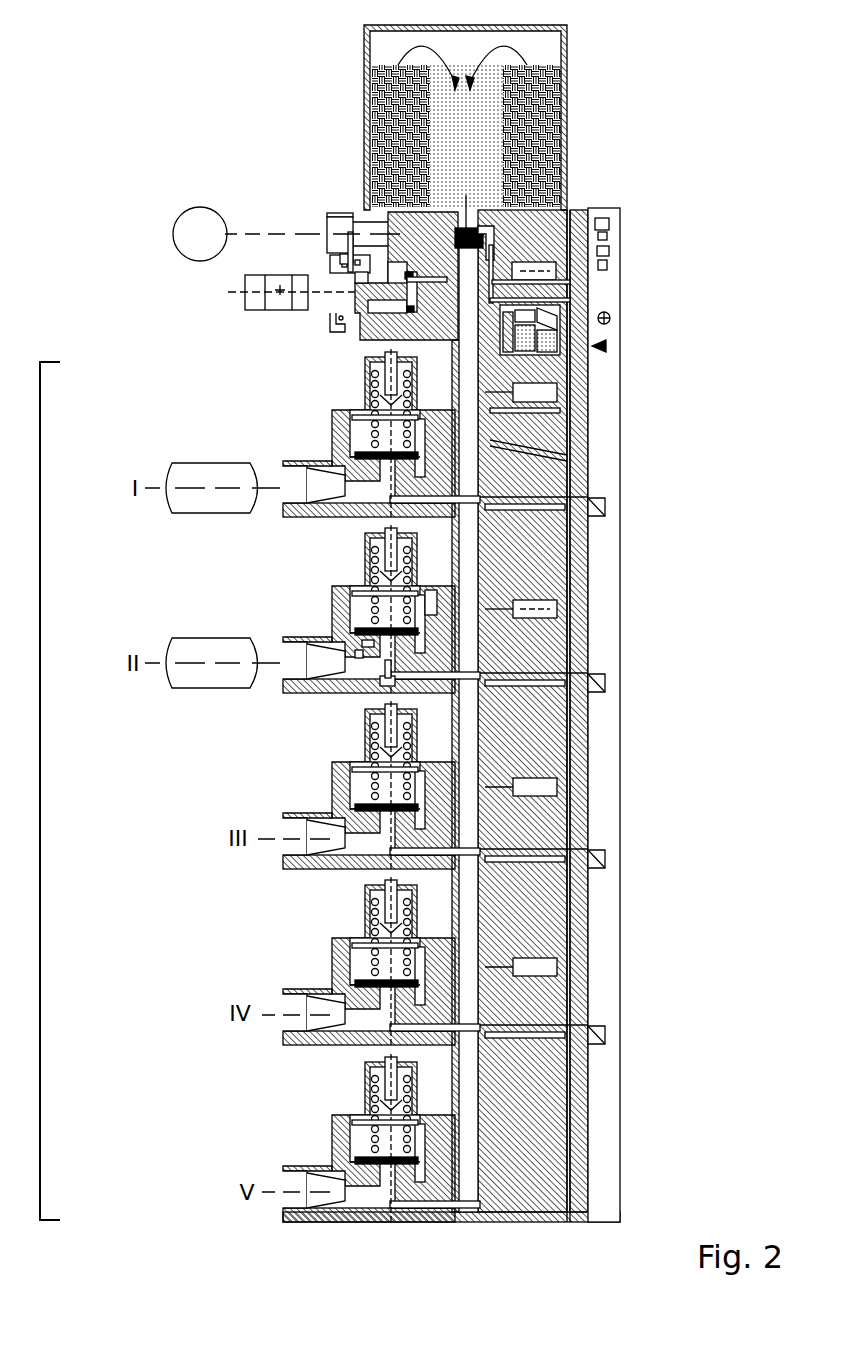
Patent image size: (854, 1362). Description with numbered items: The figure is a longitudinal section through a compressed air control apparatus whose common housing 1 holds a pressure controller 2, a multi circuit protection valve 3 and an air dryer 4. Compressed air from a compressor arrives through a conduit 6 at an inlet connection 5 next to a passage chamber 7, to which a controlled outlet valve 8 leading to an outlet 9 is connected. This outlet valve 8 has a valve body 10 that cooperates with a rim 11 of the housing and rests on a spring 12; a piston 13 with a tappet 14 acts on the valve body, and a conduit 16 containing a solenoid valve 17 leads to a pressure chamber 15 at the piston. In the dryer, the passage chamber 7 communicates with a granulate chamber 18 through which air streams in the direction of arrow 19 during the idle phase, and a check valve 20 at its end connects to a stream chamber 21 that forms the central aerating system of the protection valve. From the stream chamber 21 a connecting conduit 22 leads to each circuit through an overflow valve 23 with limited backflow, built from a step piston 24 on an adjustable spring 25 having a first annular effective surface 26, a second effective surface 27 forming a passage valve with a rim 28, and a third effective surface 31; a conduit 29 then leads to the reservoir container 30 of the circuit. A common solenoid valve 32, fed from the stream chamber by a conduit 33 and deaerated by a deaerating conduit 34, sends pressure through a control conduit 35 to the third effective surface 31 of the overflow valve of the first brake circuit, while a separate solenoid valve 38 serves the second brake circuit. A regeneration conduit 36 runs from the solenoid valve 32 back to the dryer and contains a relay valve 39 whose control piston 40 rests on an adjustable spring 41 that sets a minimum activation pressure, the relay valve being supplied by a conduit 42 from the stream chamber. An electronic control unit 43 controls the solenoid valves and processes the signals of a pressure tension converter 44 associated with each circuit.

The common housing 1 is at (525, 1195).
The pressure controller 2 is at (343, 339).
The multi circuit protection valve 3 is at (40, 794).
The air dryer 4 is at (396, 60).
The inlet connection 5 is at (342, 220).
The conduit 6 is at (350, 240).
The passage chamber 7 is at (362, 214).
The controlled outlet valve 8 is at (332, 325).
The outlet 9 is at (330, 312).
The valve body 10 is at (355, 290).
The rim 11 is at (375, 306).
The spring 12 is at (356, 300).
The piston 13 is at (410, 335).
The tappet 14 is at (400, 318).
The pressure chamber 15 is at (335, 270).
The conduit 16 is at (342, 258).
The solenoid valve 17 is at (556, 268).
The granulate chamber 18 is at (567, 97).
The arrow 19 is at (500, 50).
The check valve 20 is at (482, 230).
The stream chamber 21 is at (494, 250).
The connecting conduit 22 is at (445, 496).
The overflow valve 23 is at (324, 454).
The step piston 24 is at (352, 620).
The spring 25 is at (372, 572).
The first annular effective surface 26 is at (366, 643).
The second effective surface 27 is at (390, 680).
The rim 28 is at (358, 654).
The conduit 29 is at (385, 688).
The reservoir container 30 is at (232, 688).
The third effective surface 31 is at (431, 590).
The common solenoid valve 32 is at (560, 388).
The conduit 33 is at (560, 411).
The deaerating conduit 34 is at (571, 548).
The control conduit 35 is at (567, 458).
The regeneration conduit 36 is at (560, 308).
The separate solenoid valve 38 is at (560, 605).
The relay valve 39 is at (560, 328).
The control piston 40 is at (606, 346).
The spring 41 is at (560, 341).
The conduit 42 is at (612, 226).
The electronic control unit 43 is at (605, 437).
The pressure tension converter 44 is at (606, 681).